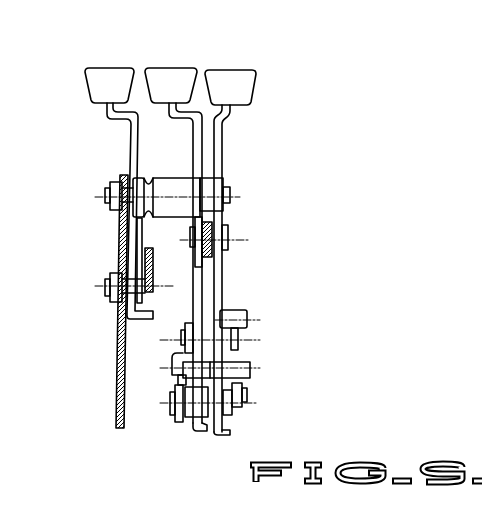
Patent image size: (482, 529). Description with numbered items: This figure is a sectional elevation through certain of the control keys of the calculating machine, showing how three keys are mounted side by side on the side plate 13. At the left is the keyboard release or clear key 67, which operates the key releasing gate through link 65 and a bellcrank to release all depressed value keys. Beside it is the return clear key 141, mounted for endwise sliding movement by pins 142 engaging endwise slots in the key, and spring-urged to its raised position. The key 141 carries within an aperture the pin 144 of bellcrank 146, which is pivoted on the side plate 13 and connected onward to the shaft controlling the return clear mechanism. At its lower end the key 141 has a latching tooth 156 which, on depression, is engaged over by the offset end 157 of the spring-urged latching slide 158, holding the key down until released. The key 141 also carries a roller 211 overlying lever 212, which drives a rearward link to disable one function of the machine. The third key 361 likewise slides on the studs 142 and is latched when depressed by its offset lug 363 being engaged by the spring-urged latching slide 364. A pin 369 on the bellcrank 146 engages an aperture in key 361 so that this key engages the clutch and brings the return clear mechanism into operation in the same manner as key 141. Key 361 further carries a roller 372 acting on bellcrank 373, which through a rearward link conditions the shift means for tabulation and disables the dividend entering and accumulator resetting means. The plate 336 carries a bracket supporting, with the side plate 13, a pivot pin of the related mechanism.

The side plate 13 is at (118, 357).
The link 65 is at (145, 262).
The keyboard release or clear key 67 is at (107, 72).
The return clear key 141 is at (172, 72).
The pins 142 is at (169, 185).
The pin 144 is at (192, 233).
The bellcrank 146 is at (208, 223).
The latching tooth 156 is at (180, 380).
The offset end 157 is at (188, 398).
The latching slide 158 is at (198, 431).
The roller 211 is at (172, 355).
The lever 212 is at (177, 418).
The plate 336 is at (224, 429).
The key 361 is at (232, 73).
The offset lug 363 is at (250, 365).
The latching slide 364 is at (242, 390).
The pin 369 is at (218, 245).
The roller 372 is at (238, 309).
The bellcrank 373 is at (232, 337).